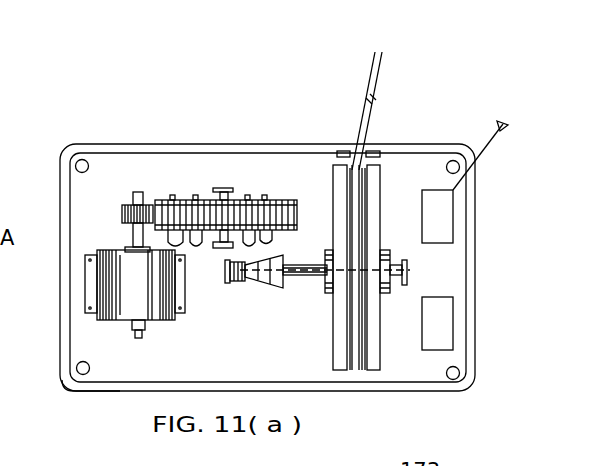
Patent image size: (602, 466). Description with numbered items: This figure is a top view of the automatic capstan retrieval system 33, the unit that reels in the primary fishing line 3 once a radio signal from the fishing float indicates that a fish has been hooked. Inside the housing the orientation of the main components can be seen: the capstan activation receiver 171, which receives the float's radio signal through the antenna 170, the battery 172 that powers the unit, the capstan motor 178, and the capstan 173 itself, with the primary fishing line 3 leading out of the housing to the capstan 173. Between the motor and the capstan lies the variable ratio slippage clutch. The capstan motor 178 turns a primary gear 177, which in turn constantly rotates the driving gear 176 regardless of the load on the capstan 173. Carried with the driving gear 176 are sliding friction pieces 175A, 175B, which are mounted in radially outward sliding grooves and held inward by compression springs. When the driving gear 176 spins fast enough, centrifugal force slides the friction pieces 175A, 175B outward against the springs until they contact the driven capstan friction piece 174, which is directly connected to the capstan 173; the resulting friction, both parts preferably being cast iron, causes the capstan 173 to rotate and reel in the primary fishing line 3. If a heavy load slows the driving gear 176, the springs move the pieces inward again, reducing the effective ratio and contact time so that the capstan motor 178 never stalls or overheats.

The primary fishing line 3 is at (380, 70).
The automatic capstan retrieval system 33 is at (100, 393).
The antenna 170 is at (488, 143).
The capstan activation receiver 171 is at (432, 212).
The battery 172 is at (445, 329).
The capstan 173 is at (342, 318).
The capstan friction piece 174 is at (264, 282).
The sliding friction piece 175A is at (286, 194).
The sliding friction piece 175B is at (243, 262).
The driving gear 176 is at (265, 202).
The primary gear 177 is at (122, 213).
The capstan motor 178 is at (147, 307).